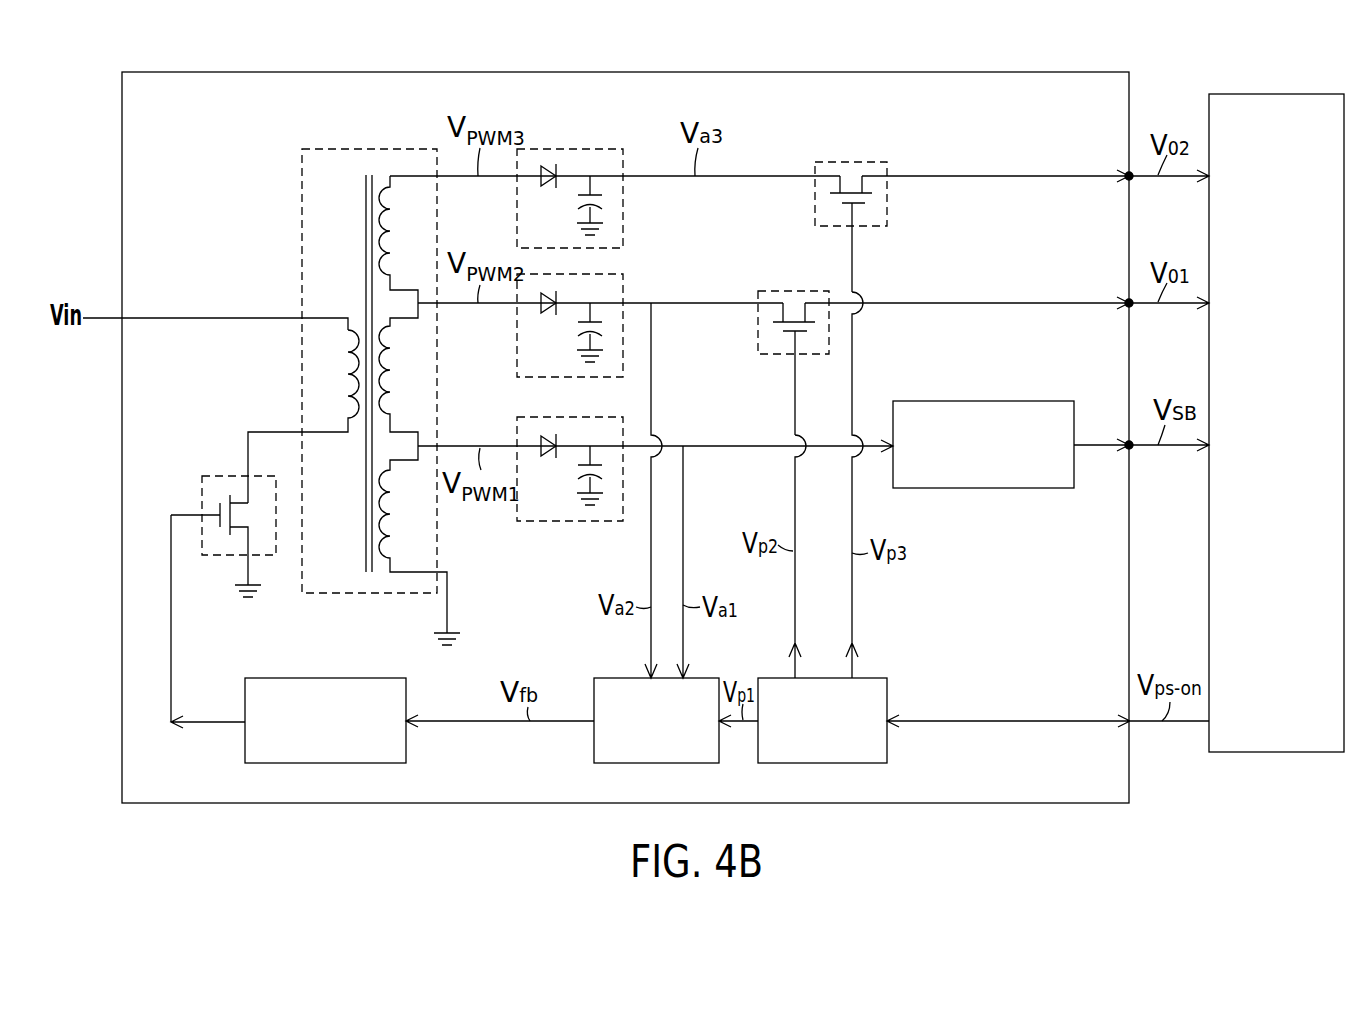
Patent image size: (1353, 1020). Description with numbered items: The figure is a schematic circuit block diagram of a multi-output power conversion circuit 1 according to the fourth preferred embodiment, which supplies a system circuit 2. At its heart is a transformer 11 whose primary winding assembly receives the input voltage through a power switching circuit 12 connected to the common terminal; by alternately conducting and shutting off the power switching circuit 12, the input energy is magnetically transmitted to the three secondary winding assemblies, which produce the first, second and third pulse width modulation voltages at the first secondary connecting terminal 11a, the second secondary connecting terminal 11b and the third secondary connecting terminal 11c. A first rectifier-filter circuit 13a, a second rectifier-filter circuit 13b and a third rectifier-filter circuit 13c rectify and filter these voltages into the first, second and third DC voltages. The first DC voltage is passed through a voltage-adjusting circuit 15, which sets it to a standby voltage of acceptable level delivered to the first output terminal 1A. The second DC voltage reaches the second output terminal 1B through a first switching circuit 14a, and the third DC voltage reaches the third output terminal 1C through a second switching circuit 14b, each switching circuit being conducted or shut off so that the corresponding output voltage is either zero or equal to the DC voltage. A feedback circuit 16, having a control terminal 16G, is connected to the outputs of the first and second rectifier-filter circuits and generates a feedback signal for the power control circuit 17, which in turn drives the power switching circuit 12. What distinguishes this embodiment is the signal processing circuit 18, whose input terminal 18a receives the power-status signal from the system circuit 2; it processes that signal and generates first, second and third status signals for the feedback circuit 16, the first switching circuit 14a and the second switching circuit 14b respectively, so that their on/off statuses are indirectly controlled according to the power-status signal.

The power conversion circuit 1 is at (590, 72).
The system circuit 2 is at (1252, 93).
The transformer 11 is at (353, 149).
The first secondary connecting terminal 11a is at (440, 444).
The second secondary connecting terminal 11b is at (437, 305).
The third secondary connecting terminal 11c is at (437, 178).
The power switching circuit 12 is at (228, 475).
The first rectifier-filter circuit 13a is at (570, 521).
The second rectifier-filter circuit 13b is at (625, 283).
The third rectifier-filter circuit 13c is at (570, 149).
The first switching circuit 14a is at (793, 291).
The second switching circuit 14b is at (852, 162).
The voltage-adjusting circuit 15 is at (978, 401).
The feedback circuit 16 is at (707, 678).
The control terminal 16G is at (723, 723).
The power control circuit 17 is at (307, 678).
The signal processing circuit 18 is at (858, 678).
The input terminal of the signal processing circuit 18a is at (890, 723).
The first output terminal 1A is at (1127, 443).
The second output terminal 1B is at (1127, 300).
The third output terminal 1C is at (1127, 173).